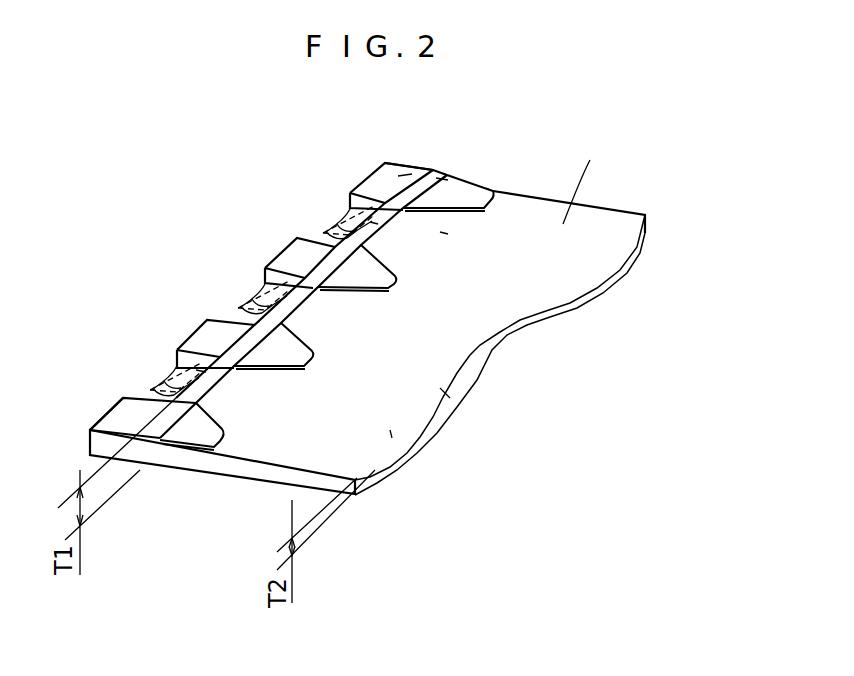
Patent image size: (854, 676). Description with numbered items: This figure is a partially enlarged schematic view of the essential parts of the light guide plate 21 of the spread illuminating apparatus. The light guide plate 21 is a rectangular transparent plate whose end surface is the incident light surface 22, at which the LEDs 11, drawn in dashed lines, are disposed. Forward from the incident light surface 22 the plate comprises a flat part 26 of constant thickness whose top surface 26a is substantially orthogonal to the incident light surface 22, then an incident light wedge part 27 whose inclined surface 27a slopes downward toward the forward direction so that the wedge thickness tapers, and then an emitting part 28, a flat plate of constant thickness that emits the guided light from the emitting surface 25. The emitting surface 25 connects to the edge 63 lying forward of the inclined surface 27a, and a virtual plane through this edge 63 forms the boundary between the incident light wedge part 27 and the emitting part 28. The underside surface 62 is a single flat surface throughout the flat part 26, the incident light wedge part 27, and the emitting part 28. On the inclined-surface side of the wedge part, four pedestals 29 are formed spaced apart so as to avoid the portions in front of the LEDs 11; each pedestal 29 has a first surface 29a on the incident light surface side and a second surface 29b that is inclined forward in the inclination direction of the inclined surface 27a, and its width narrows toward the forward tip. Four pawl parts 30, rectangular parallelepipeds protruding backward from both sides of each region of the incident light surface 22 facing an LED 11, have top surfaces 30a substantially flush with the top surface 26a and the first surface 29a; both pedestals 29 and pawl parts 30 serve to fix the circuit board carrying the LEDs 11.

The light guide plate 21 is at (592, 238).
The incident light surface 22 is at (200, 372).
The emitting surface 25 is at (420, 392).
The flat part 26 is at (284, 283).
The top surface of the flat part 26a is at (262, 300).
The incident light wedge part 27 is at (395, 208).
The inclined surface 27a is at (370, 222).
The emitting part 28 is at (586, 178).
The pedestal 29 is at (486, 206).
The first surface 29a is at (440, 180).
The second surface 29b is at (493, 186).
The pawl part 30 is at (122, 415).
The top surface of the pawl part 30a is at (402, 172).
The LED 11 is at (345, 215).
The underside surface 62 is at (390, 430).
The edge 63 is at (440, 232).